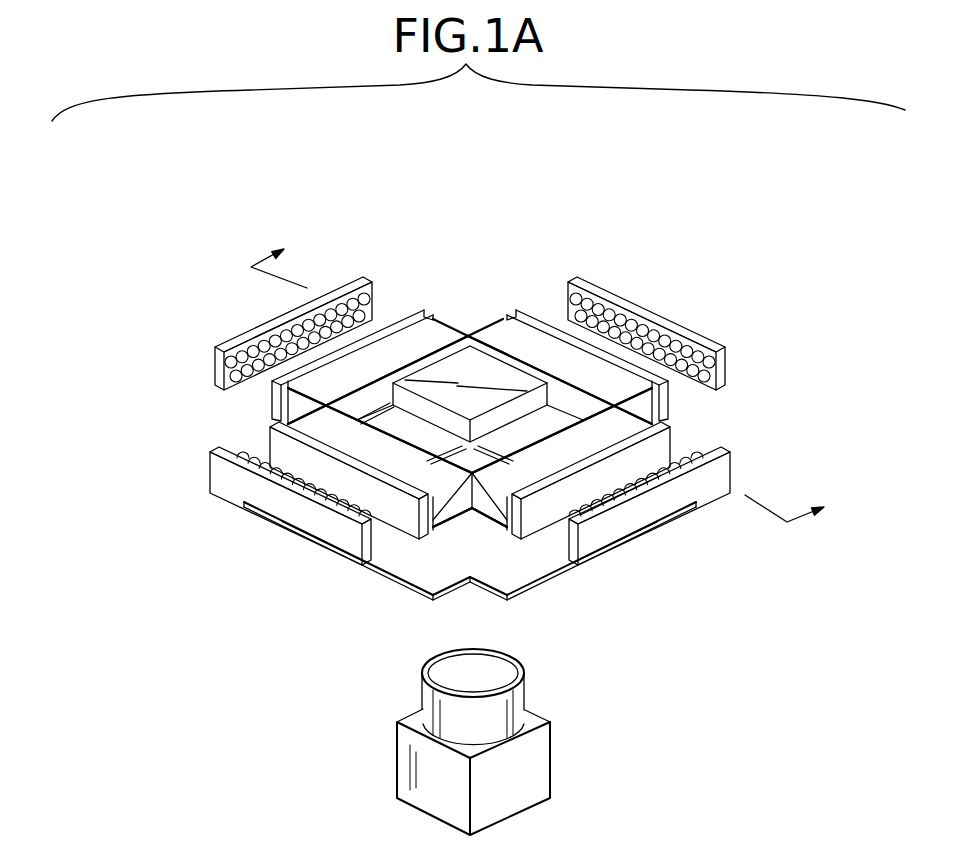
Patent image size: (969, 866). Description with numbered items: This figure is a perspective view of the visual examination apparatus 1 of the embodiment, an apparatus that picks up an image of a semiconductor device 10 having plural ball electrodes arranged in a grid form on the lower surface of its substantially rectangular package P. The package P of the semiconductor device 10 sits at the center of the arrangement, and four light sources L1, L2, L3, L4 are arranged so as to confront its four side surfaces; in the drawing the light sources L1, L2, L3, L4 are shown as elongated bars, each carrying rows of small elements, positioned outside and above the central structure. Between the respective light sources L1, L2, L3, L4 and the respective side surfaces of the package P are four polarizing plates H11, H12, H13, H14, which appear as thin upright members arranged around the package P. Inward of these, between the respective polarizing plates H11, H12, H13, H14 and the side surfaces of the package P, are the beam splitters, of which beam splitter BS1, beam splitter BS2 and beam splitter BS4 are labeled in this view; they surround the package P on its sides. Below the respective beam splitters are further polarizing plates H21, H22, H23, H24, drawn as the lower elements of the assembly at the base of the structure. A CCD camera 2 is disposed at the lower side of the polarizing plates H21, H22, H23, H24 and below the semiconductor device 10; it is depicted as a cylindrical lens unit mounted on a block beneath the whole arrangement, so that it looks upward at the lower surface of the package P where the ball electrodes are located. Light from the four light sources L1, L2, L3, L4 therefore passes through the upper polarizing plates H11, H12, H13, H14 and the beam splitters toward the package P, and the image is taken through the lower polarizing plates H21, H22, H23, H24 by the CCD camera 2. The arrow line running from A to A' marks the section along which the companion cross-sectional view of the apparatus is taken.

The visual examination apparatus 1 is at (278, 201).
The semiconductor device 10 is at (460, 329).
The package P is at (446, 366).
The beam splitter BS1 is at (497, 325).
The beam splitter BS2 is at (458, 512).
The beam splitter BS4 is at (408, 341).
The polarizing plate H11 is at (522, 314).
The polarizing plate H12 is at (268, 438).
The polarizing plate H13 is at (270, 406).
The polarizing plate H14 is at (672, 432).
The polarizing plate H21 is at (632, 520).
The polarizing plate H22 is at (300, 543).
The polarizing plate H23 is at (408, 442).
The polarizing plate H24 is at (608, 547).
The light source L1 is at (665, 322).
The light source L2 is at (210, 478).
The light source L3 is at (214, 356).
The light source L4 is at (735, 459).
The CCD camera 2 is at (530, 762).
The arrow line A–A' A is at (279, 257).
The arrow line A– A' is at (801, 511).